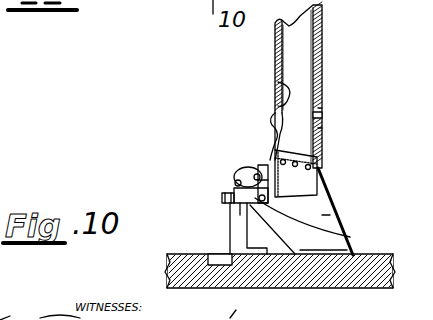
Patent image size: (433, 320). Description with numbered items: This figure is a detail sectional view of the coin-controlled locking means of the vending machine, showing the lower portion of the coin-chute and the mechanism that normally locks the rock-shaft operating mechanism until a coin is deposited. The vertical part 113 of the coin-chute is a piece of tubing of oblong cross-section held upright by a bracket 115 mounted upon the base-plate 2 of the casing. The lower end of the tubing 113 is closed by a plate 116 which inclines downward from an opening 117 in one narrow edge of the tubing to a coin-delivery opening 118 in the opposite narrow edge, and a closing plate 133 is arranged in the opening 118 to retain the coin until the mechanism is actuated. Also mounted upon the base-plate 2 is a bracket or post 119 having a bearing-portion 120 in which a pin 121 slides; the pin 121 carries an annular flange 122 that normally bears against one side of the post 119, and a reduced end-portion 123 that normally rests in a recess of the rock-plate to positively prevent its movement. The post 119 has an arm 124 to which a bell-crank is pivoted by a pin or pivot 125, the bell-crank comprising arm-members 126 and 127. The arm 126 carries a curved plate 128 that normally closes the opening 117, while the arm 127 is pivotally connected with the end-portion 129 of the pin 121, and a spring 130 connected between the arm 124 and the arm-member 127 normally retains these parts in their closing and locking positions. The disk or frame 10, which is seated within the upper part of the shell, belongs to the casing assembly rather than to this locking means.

The base-plate 2 is at (342, 282).
The disk or frame 10 is at (232, 19).
The coin-chute part 113 is at (322, 28).
The bracket 115 is at (322, 215).
The plate 116 is at (320, 150).
The opening 117 is at (278, 82).
The coin-delivery opening 118 is at (322, 113).
The bracket or post 119 is at (237, 235).
The bearing-portion 120 is at (236, 187).
The pin 121 is at (229, 204).
The annular flange 122 is at (251, 208).
The reduced end-portion 123 is at (222, 198).
The arm 124 is at (240, 177).
The pin or pivot 125 is at (257, 168).
The arm-member 126 is at (267, 130).
The arm-member 127 is at (327, 198).
The curved plate 128 is at (283, 117).
The end-portion 129 is at (350, 237).
The spring 130 is at (236, 168).
The closing plate 133 is at (322, 128).